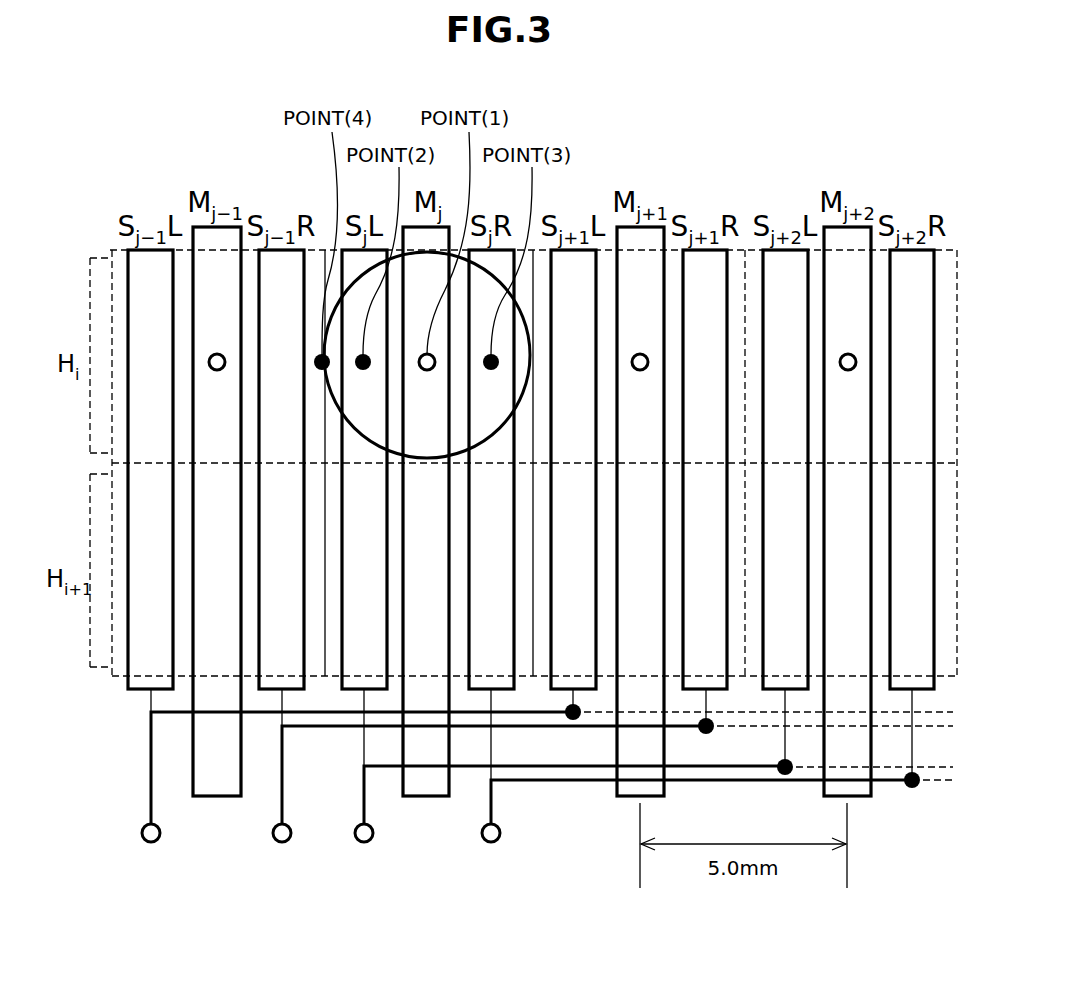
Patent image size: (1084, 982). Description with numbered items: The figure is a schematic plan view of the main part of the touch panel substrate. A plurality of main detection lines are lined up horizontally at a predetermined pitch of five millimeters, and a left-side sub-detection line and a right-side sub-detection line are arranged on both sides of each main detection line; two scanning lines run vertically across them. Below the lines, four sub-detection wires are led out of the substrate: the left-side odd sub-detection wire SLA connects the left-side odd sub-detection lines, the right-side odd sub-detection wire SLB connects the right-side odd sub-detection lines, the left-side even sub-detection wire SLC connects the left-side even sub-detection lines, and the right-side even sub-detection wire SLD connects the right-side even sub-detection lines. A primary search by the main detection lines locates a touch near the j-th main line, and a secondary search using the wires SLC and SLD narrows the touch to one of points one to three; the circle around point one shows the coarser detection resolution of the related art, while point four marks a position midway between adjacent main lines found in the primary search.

The left-side odd sub-detection wire SLA is at (150, 795).
The right-side odd sub-detection wire SLB is at (281, 795).
The left-side even sub-detection wire SLC is at (362, 795).
The right-side even sub-detection wire SLD is at (490, 795).